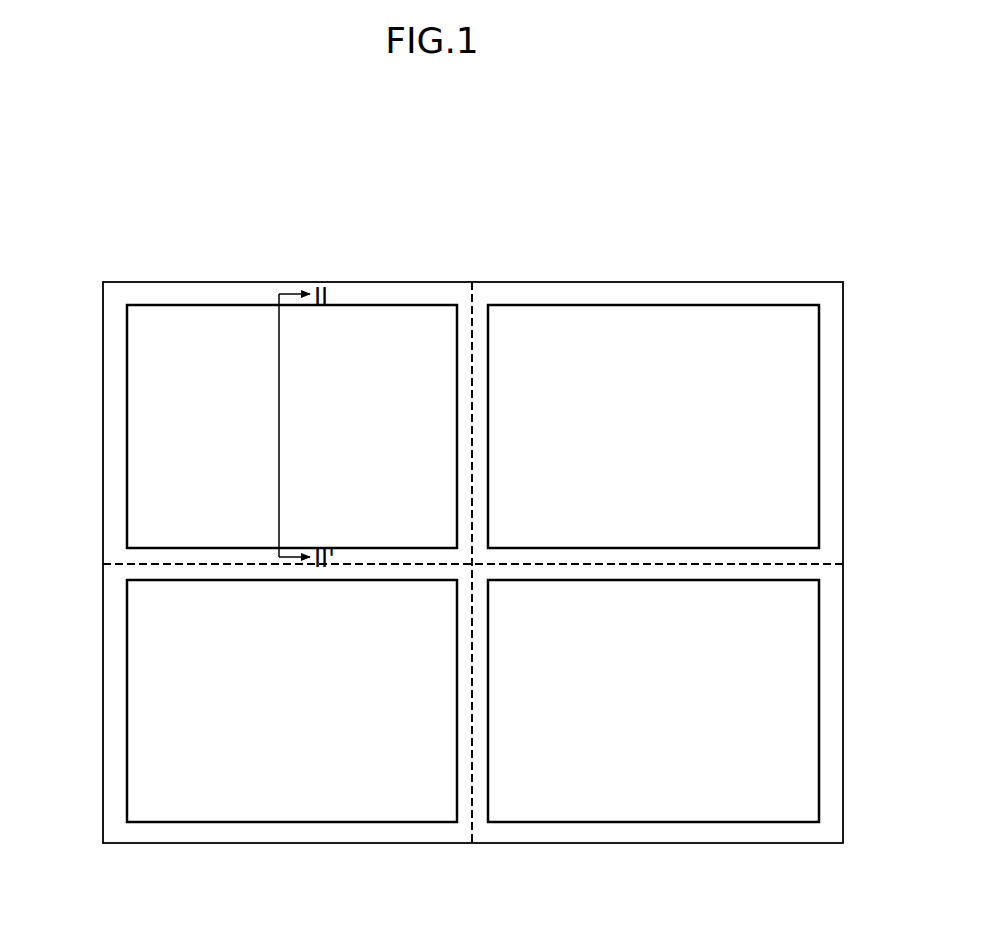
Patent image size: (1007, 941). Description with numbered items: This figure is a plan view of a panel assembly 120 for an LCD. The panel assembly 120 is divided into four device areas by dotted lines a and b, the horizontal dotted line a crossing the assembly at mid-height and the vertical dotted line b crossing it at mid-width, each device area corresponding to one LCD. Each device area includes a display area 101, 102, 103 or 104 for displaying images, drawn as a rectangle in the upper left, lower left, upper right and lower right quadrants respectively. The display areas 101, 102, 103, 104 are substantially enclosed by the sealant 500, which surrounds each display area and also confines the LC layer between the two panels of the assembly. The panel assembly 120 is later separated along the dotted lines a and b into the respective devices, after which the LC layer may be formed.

The panel assembly 120 is at (485, 246).
The display area 101 is at (340, 317).
The display area 102 is at (281, 810).
The display area 103 is at (625, 318).
The display area 104 is at (607, 810).
The sealant 500 is at (392, 305).
The dotted line a is at (133, 565).
The dotted line b is at (478, 812).